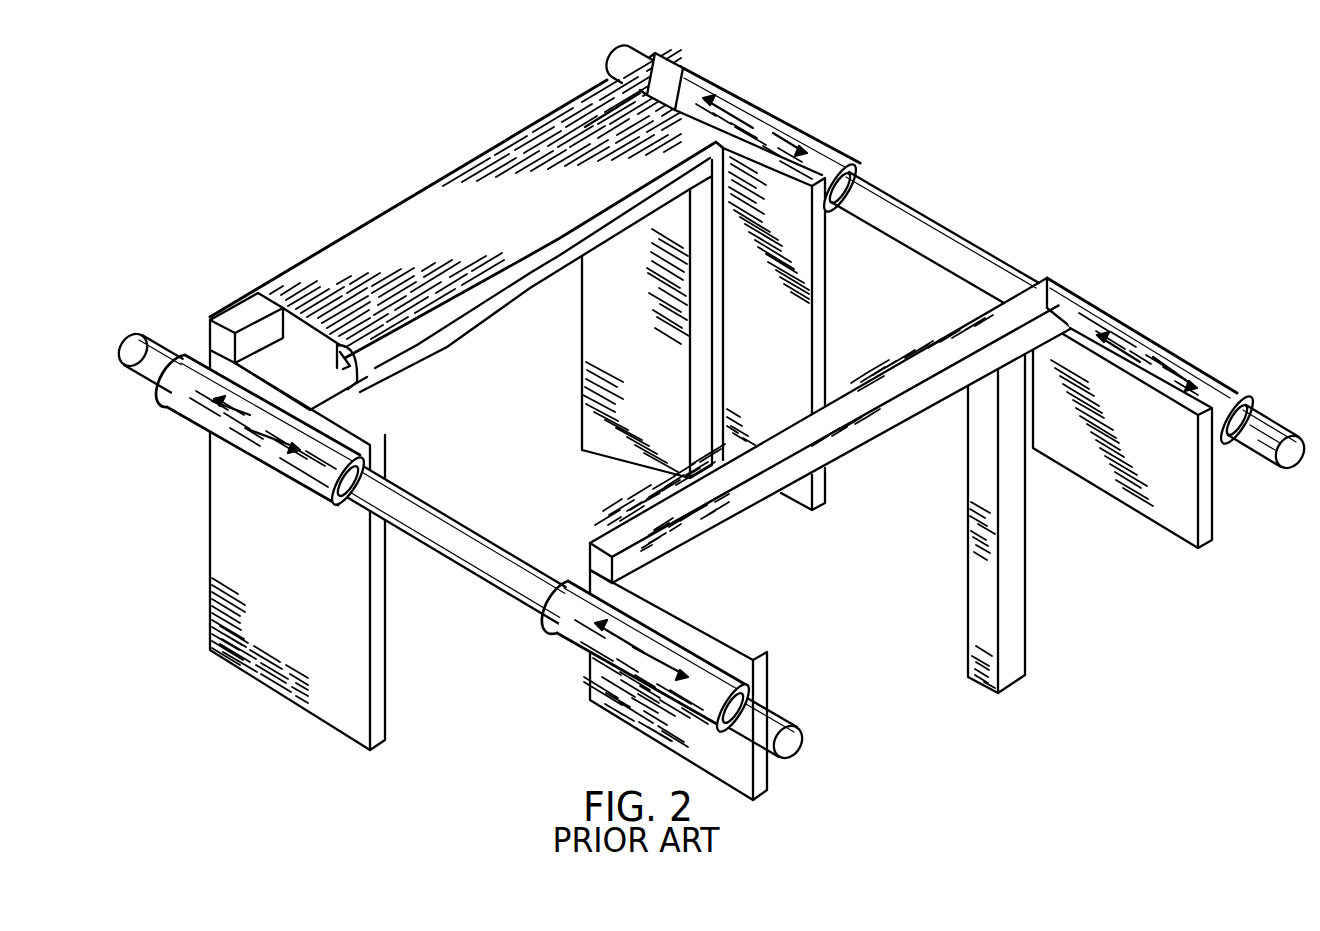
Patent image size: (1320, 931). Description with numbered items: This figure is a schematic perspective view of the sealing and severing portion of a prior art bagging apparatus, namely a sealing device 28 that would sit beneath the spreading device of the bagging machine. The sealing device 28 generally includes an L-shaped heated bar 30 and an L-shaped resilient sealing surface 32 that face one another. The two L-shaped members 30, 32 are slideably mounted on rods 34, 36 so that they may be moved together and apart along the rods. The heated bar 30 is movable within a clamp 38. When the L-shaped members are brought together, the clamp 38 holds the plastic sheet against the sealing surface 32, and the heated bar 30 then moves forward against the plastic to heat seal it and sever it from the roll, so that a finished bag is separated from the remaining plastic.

The sealing device 28 is at (1098, 222).
The L-shaped heated bar 30 is at (362, 388).
The L-shaped resilient sealing surface 32 is at (870, 422).
The rod 34 is at (467, 543).
The rod 36 is at (952, 250).
The clamp 38 is at (450, 181).